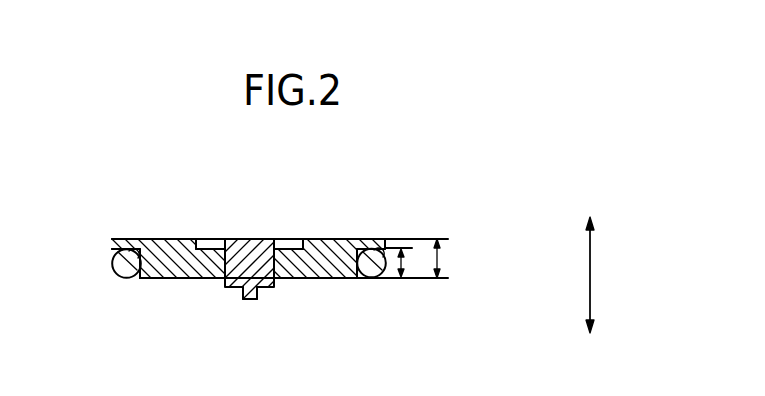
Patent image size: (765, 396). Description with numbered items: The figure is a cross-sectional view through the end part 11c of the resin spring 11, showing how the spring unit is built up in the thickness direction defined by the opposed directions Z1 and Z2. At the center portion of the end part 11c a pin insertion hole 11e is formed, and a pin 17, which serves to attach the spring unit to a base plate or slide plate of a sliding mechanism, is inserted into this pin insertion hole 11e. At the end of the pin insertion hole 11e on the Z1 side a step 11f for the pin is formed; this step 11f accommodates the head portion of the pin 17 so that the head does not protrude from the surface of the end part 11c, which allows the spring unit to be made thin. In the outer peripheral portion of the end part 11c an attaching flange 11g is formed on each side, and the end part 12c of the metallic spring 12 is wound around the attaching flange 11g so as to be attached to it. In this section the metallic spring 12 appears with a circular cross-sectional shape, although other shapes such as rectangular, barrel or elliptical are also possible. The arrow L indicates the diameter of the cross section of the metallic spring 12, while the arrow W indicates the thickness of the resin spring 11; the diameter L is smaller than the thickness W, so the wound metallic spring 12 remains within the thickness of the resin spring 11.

The resin spring 11 is at (280, 195).
The end part 11c is at (328, 240).
The pin insertion hole 11e is at (266, 288).
The step for the pin 11f is at (288, 240).
The attaching flange 11g is at (113, 260).
The metallic spring 12 is at (260, 299).
The end part 12c is at (127, 265).
The pin 17 is at (252, 240).
The diameter of the cross-section of the metallic spring L is at (405, 263).
The thickness of the resin spring W is at (442, 258).
The direction Z1 is at (591, 262).
The direction Z2 is at (591, 297).